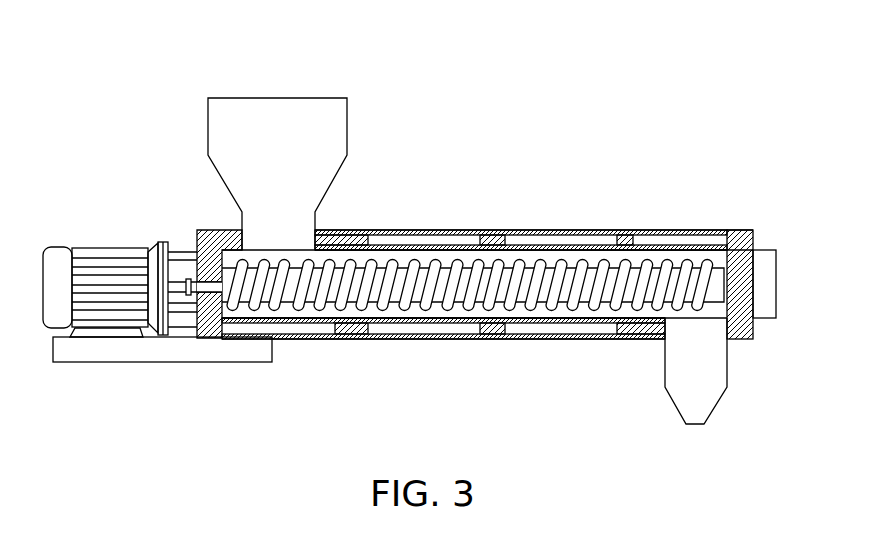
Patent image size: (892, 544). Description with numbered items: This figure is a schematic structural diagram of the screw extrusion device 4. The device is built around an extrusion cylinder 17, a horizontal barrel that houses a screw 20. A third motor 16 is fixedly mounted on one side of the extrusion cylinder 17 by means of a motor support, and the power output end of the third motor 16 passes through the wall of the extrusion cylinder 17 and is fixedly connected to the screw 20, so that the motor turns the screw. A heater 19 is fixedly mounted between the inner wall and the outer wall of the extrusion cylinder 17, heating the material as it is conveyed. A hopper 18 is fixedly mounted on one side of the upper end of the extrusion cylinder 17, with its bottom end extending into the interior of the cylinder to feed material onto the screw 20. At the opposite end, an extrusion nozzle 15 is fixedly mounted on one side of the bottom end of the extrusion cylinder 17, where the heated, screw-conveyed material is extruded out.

The screw extrusion device 4 is at (487, 230).
The extrusion nozzle 15 is at (712, 340).
The third motor 16 is at (131, 272).
The extrusion cylinder 17 is at (206, 235).
The hopper 18 is at (272, 168).
The heater 19 is at (600, 238).
The screw 20 is at (630, 280).